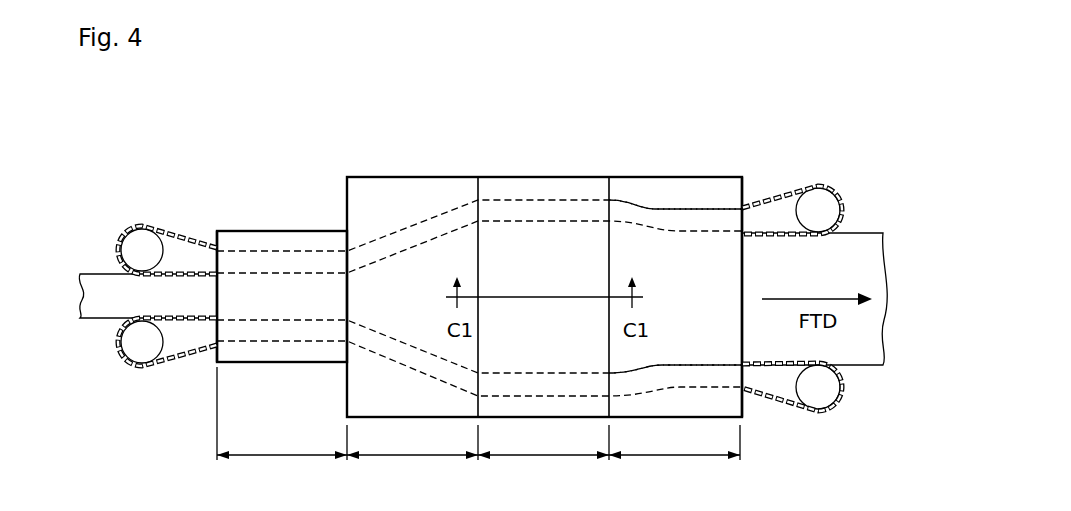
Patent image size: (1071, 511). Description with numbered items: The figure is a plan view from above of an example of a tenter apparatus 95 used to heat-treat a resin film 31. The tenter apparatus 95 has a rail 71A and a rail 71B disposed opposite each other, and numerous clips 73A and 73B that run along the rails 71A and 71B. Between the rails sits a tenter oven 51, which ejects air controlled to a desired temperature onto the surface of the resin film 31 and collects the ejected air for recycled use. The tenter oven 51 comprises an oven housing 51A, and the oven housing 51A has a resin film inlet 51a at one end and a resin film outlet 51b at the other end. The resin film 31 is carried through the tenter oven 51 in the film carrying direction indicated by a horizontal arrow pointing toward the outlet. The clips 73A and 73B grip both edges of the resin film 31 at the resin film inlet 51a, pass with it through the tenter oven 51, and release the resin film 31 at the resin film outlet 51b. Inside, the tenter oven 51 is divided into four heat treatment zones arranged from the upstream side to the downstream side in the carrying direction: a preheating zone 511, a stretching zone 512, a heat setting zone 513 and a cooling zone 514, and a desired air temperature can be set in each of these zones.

The tenter apparatus 95 is at (288, 184).
The tenter oven 51 is at (388, 160).
The oven housing 51A is at (502, 178).
The resin film inlet 51a is at (217, 300).
The resin film outlet 51b is at (742, 313).
The rail 71A is at (630, 203).
The rail 71B is at (665, 363).
The resin film 31 is at (118, 297).
The clips 73A is at (123, 230).
The clips 73B is at (118, 357).
The preheating zone 511 is at (282, 430).
The stretching zone 512 is at (412, 459).
The heat setting zone 513 is at (543, 459).
The cooling zone 514 is at (674, 459).